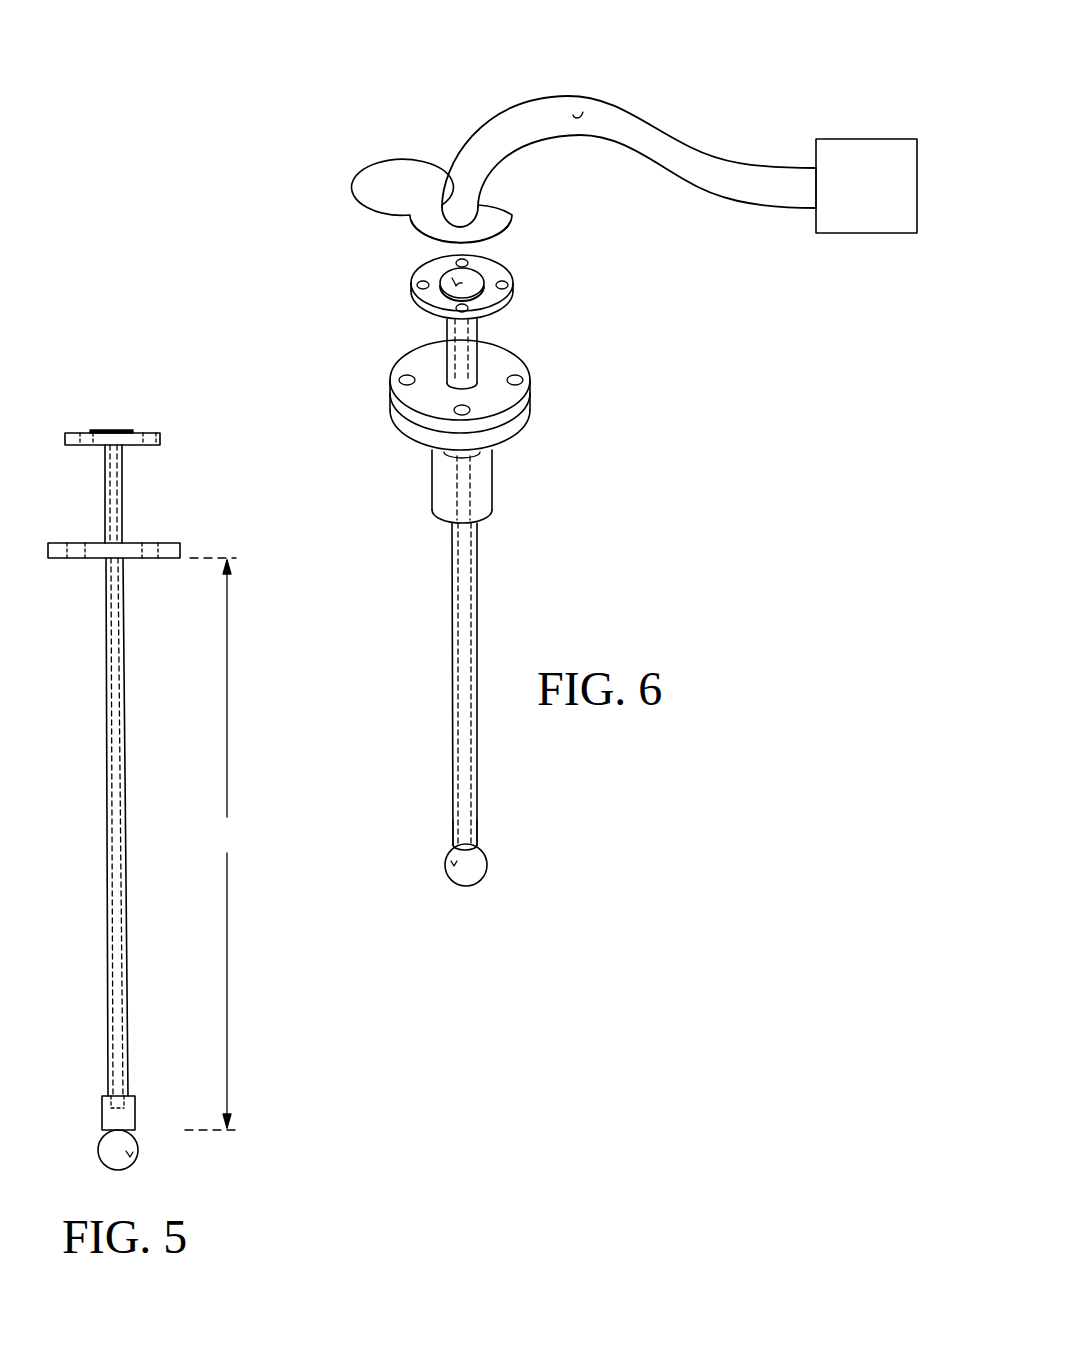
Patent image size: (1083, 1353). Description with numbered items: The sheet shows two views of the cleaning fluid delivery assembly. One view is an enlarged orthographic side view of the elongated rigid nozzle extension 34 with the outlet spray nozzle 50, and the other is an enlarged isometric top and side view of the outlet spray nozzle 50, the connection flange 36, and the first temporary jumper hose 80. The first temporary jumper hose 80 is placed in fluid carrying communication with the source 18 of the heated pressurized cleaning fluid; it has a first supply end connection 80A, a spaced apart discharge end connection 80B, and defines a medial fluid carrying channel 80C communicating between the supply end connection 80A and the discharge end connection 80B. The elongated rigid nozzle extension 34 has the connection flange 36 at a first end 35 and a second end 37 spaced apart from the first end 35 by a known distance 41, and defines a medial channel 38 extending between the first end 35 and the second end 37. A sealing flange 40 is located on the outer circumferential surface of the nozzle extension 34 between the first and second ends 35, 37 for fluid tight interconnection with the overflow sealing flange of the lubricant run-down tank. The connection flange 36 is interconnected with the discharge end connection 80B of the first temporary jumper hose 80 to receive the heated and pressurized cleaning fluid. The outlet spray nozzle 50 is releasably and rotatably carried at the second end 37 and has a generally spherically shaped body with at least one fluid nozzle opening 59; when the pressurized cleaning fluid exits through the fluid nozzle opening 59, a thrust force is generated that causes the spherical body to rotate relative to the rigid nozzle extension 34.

In FIG. 6, the source 18 is at (881, 197).
In FIG. 5, the elongated rigid nozzle extension 34 is at (107, 673).
In FIG. 6, the elongated rigid nozzle extension 34 is at (478, 578).
In FIG. 5, the first end 35 is at (103, 463).
In FIG. 6, the first end 35 is at (462, 354).
In FIG. 5, the connection flange 36 is at (157, 432).
In FIG. 6, the connection flange 36 is at (492, 272).
In FIG. 5, the second end 37 is at (110, 1075).
In FIG. 6, the second end 37 is at (468, 825).
In FIG. 5, the medial channel 38 is at (110, 890).
In FIG. 6, the medial channel 38 is at (452, 284).
In FIG. 5, the sealing flange 40 is at (172, 543).
In FIG. 6, the sealing flange 40 is at (498, 363).
In FIG. 5, the known distance 41 is at (217, 844).
In FIG. 5, the outlet spray nozzle 50 is at (110, 1150).
In FIG. 6, the outlet spray nozzle 50 is at (472, 865).
In FIG. 5, the fluid nozzle opening 59 is at (132, 1157).
In FIG. 6, the fluid nozzle opening 59 is at (452, 863).
In FIG. 6, the first temporary jumper hose 80 is at (648, 108).
In FIG. 6, the first supply end connection 80A is at (810, 188).
In FIG. 6, the discharge end connection 80B is at (432, 208).
In FIG. 6, the medial fluid carrying channel 80C is at (583, 112).